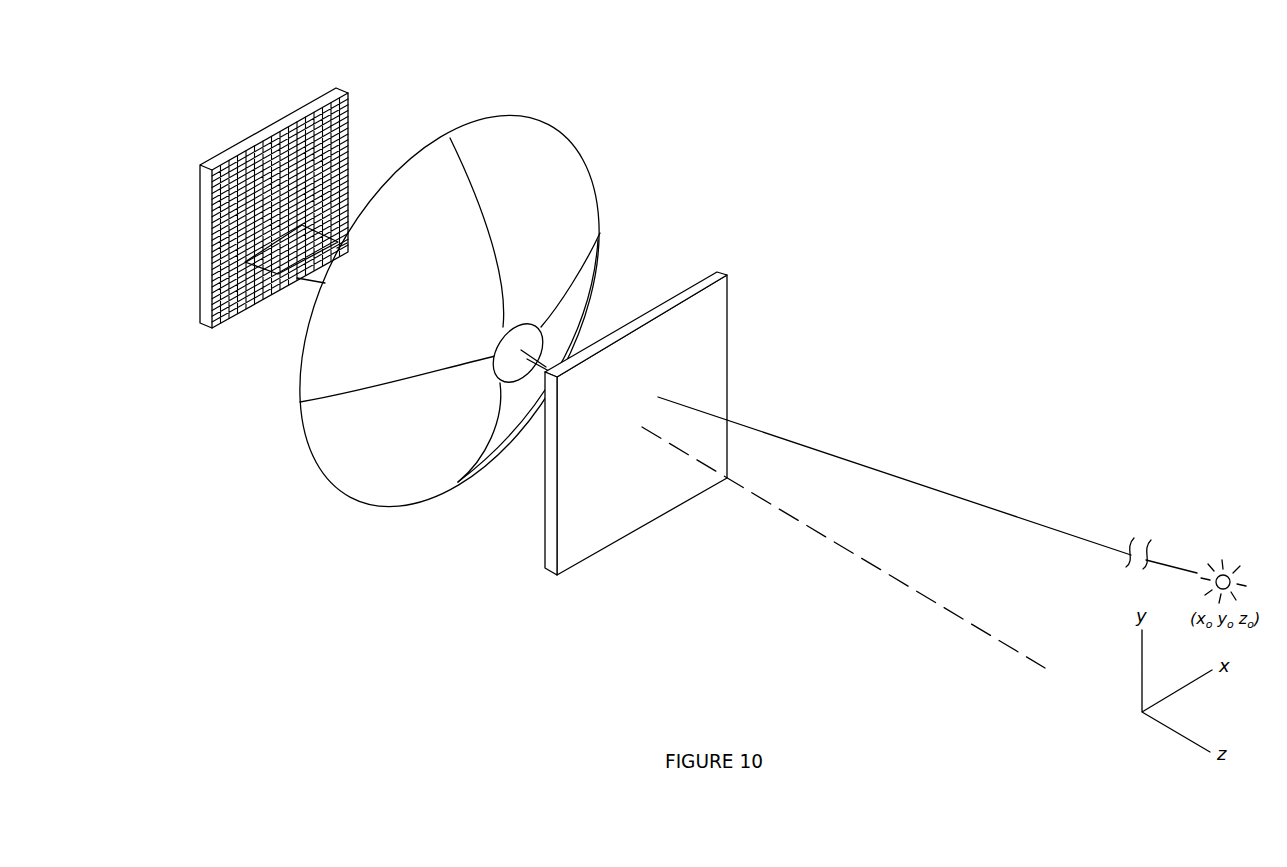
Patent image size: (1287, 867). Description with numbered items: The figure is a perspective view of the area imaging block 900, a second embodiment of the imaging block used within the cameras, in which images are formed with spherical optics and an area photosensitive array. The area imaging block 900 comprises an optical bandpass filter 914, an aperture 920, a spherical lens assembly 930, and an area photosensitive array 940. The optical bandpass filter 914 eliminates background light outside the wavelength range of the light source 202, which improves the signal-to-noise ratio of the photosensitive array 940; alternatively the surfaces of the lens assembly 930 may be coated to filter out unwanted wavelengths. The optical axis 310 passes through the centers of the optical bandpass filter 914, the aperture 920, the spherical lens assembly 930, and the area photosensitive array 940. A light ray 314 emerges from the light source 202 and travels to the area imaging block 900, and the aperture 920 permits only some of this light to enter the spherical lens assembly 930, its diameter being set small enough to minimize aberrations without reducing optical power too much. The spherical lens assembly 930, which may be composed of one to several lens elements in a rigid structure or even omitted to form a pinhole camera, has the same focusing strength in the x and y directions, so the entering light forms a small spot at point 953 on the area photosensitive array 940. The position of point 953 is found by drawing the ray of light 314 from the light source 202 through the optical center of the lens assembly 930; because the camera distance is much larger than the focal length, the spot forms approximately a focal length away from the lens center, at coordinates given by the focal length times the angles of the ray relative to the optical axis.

The area imaging block 900 is at (427, 53).
The area photosensitive array 940 is at (348, 124).
The point 953 is at (245, 263).
The spherical lens assembly 930 is at (562, 128).
The aperture 920 is at (541, 327).
The optical bandpass filter 914 is at (728, 318).
The optical axis 310 is at (908, 473).
The light ray 314 is at (943, 605).
The light source 202 is at (1225, 572).